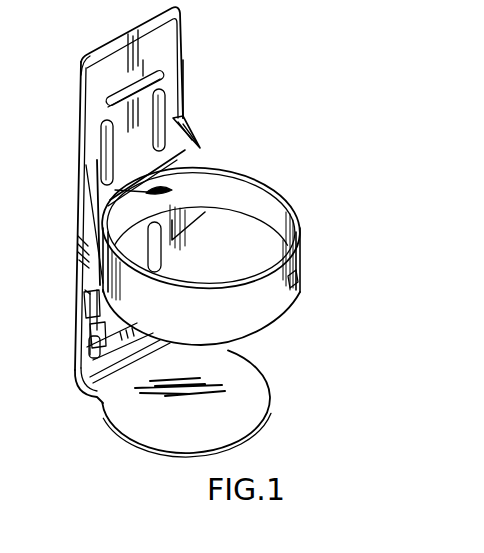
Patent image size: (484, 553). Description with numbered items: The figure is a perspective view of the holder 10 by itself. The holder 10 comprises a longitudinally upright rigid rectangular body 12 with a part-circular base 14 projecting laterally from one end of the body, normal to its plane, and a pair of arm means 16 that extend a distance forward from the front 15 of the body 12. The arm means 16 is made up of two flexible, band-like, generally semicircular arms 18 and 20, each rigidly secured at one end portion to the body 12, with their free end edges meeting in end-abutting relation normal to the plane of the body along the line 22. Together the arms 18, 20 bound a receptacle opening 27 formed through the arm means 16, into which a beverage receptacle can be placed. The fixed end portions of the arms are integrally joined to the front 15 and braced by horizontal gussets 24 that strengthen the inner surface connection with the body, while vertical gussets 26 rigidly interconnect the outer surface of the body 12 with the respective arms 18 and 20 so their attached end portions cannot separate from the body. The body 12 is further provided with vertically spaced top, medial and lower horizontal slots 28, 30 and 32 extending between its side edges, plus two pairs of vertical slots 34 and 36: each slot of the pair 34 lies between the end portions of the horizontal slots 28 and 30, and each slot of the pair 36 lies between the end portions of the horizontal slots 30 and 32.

The holder 10 is at (222, 92).
The body 12 is at (80, 125).
The base 14 is at (128, 443).
The front 15 is at (97, 68).
The arm means 16 is at (274, 181).
The arm 18 is at (303, 223).
The arm 20 is at (248, 327).
The line 22 is at (297, 282).
The horizontal gusset 24 is at (185, 162).
The vertical gusset 26 is at (204, 140).
The receptacle opening 27 is at (270, 211).
The top horizontal slot 28 is at (168, 62).
The medial horizontal slot 30 is at (150, 187).
The lower end portion horizontal slot 32 is at (83, 364).
The vertical slot 34 is at (167, 100).
The vertical slot 36 is at (166, 262).